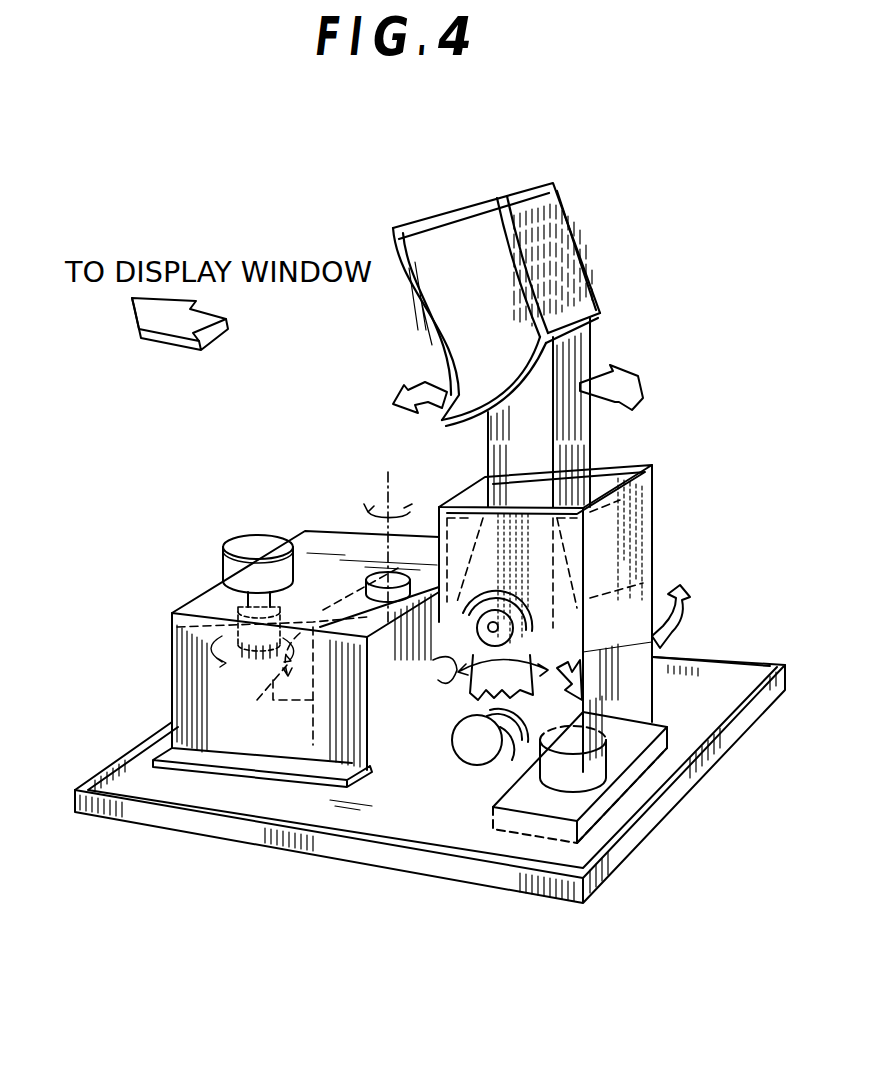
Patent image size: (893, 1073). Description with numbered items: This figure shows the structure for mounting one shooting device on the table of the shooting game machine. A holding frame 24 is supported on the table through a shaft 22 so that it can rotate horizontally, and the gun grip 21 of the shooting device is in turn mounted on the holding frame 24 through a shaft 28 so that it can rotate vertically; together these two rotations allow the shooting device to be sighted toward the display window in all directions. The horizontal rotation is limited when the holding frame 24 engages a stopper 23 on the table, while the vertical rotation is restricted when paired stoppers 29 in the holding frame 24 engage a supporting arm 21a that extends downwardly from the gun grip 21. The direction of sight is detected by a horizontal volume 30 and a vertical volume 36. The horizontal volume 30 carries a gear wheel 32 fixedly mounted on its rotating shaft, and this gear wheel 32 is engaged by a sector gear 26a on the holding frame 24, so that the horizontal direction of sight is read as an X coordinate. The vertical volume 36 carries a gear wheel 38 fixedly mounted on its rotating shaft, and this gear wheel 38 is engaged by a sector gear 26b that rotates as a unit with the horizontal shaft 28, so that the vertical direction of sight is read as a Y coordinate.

The gun grip 21 is at (550, 248).
The supporting arm 21a is at (580, 362).
The shaft 22 is at (386, 492).
The stopper 23 is at (600, 785).
The holding frame 24 is at (617, 617).
The sector gear 26a is at (288, 656).
The sector gear 26b is at (655, 658).
The shaft 28 is at (470, 608).
The paired stoppers 29 is at (600, 537).
The horizontal volume 30 is at (258, 542).
The gear wheel 32 is at (172, 622).
The vertical volume 36 is at (477, 754).
The gear wheel 38 is at (590, 742).